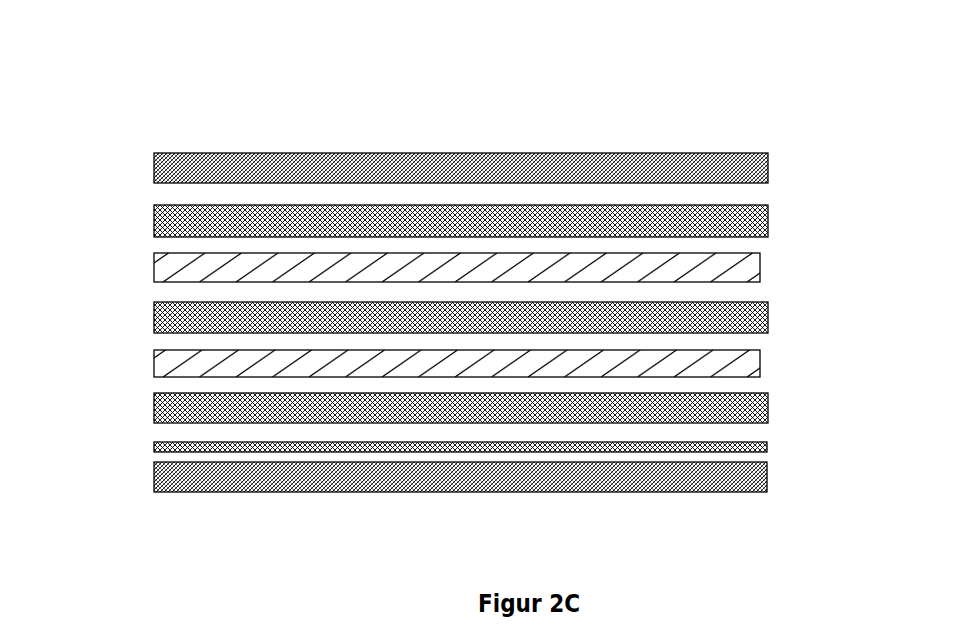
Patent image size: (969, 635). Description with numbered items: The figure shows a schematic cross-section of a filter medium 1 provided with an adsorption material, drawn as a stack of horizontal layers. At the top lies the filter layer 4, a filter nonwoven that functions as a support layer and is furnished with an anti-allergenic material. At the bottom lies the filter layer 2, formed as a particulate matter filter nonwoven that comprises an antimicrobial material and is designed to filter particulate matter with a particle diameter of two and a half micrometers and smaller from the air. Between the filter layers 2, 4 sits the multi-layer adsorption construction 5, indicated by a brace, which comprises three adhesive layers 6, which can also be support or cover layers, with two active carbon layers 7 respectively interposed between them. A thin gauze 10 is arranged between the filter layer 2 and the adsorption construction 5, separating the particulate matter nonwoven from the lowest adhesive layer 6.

The filter medium 1 is at (218, 116).
The filter layer 2 is at (176, 478).
The filter layer 4 is at (176, 172).
The multi-layer adsorption construction 5 is at (135, 195).
The adhesive layer 6 is at (755, 214).
The active carbon layer 7 is at (752, 264).
The gauze 10 is at (755, 443).